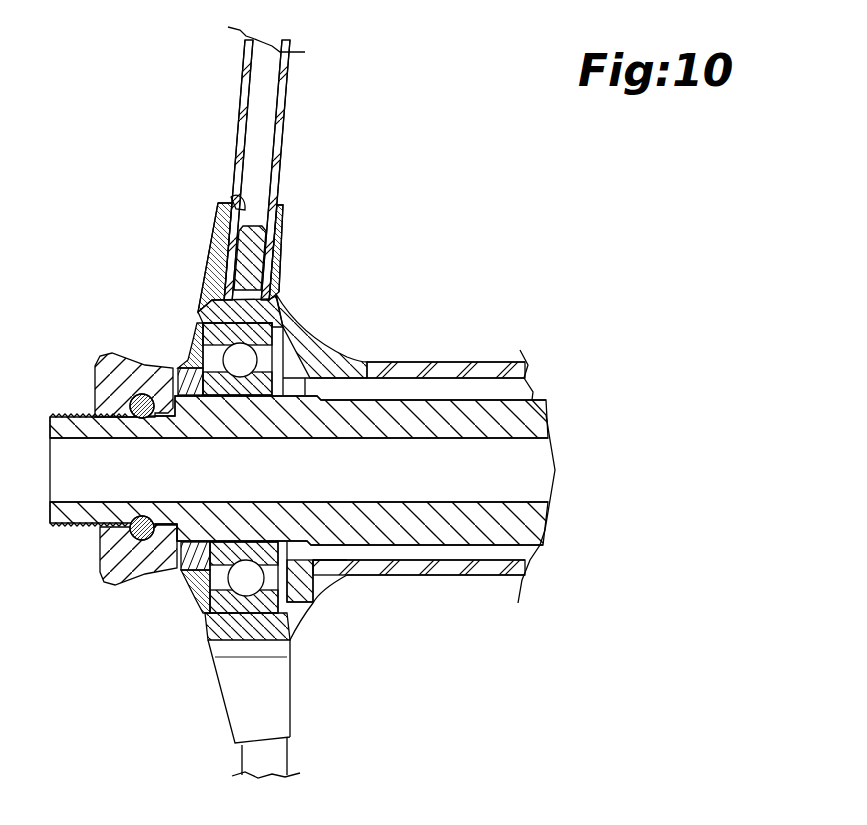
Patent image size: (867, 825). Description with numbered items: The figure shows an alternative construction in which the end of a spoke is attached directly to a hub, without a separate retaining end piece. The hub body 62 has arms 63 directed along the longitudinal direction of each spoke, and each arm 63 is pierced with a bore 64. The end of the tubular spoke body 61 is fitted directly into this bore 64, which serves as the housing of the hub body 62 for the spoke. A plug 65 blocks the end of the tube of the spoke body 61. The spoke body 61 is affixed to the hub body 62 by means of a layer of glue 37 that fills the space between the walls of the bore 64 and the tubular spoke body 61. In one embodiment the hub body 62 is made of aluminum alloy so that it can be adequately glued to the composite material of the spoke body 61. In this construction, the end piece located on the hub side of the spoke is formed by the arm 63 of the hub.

The layer of glue 37 is at (260, 312).
The spoke body 61 is at (283, 141).
The hub body 62 is at (423, 367).
The arm 63 is at (217, 247).
The bore 64 is at (230, 194).
The plug 65 is at (223, 282).